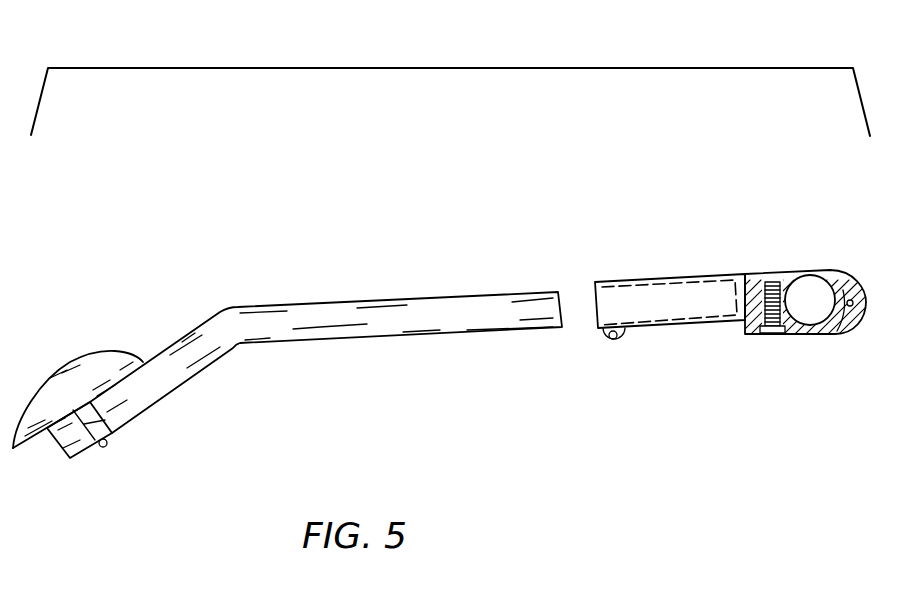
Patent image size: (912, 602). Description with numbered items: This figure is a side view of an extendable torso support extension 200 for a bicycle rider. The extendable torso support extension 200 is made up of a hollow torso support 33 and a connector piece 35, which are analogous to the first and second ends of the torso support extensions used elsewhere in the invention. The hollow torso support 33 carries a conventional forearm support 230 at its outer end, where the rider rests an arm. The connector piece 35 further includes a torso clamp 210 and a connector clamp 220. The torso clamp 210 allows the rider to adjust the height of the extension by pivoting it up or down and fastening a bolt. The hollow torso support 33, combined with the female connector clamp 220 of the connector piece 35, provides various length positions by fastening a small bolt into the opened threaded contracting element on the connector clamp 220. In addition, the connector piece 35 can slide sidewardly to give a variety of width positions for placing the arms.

The extendable torso support extension 200 is at (413, 68).
The hollow torso support 33 is at (377, 338).
The forearm support 230 is at (75, 352).
The connector piece 35 is at (700, 325).
The connector clamp 220 is at (613, 344).
The torso clamp 210 is at (830, 337).